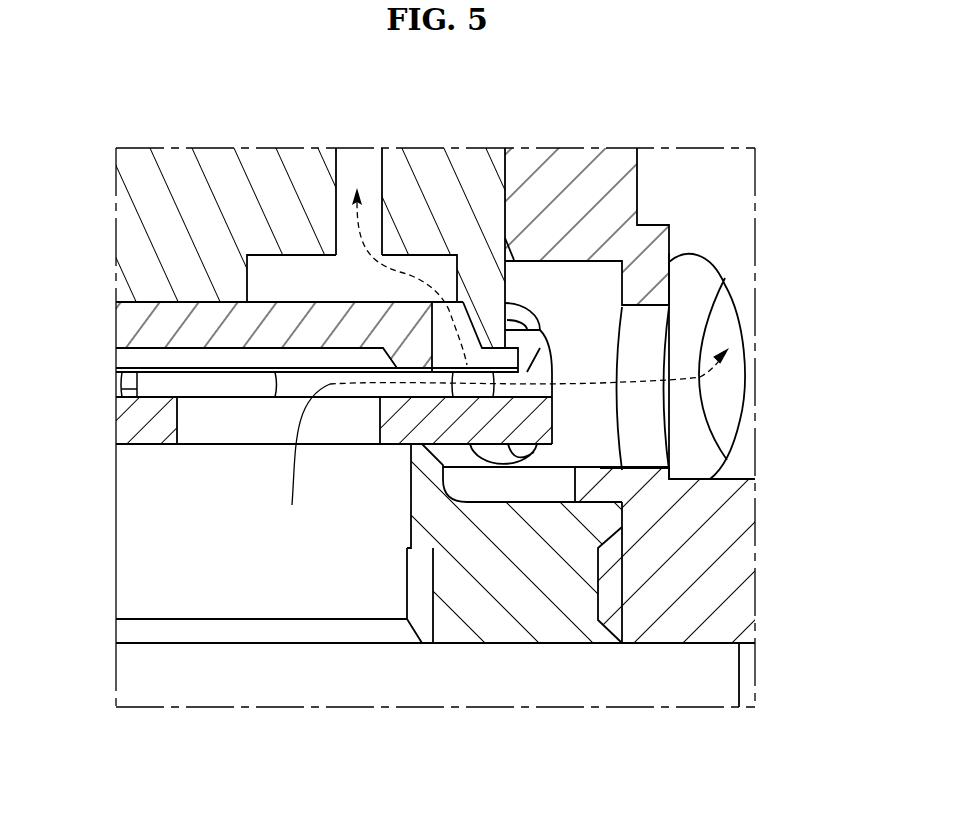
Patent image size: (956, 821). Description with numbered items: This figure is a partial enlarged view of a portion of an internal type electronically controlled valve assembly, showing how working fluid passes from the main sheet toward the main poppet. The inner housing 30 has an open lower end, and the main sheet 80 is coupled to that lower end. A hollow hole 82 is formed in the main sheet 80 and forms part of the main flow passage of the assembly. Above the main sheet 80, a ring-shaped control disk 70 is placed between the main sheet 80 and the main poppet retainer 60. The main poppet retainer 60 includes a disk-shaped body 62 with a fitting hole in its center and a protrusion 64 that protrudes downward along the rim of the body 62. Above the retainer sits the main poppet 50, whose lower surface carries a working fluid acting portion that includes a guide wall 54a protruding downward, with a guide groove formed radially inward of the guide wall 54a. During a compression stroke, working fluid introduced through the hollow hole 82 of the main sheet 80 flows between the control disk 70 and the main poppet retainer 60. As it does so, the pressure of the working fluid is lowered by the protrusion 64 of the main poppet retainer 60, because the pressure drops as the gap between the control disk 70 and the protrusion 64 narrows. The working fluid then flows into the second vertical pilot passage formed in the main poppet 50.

The inner housing 30 is at (756, 561).
The main poppet 50 is at (113, 222).
The guide wall 54a is at (528, 348).
The main poppet retainer 60 is at (113, 324).
The disk-shaped body 62 is at (282, 328).
The protrusion 64 is at (415, 345).
The control disk 70 is at (113, 418).
The main sheet 80 is at (497, 650).
The hollow hole 82 is at (205, 524).